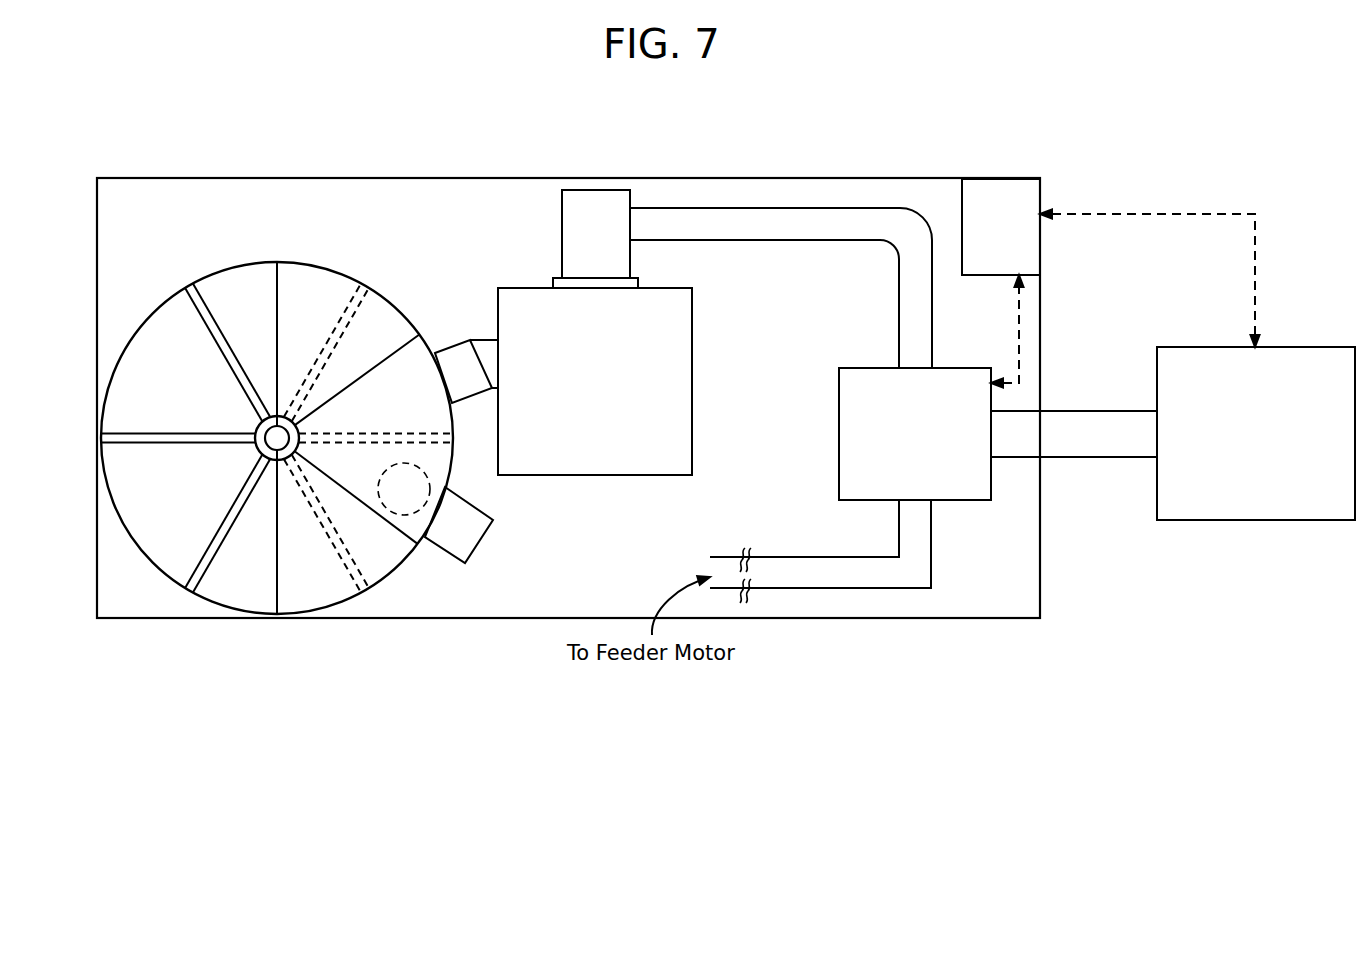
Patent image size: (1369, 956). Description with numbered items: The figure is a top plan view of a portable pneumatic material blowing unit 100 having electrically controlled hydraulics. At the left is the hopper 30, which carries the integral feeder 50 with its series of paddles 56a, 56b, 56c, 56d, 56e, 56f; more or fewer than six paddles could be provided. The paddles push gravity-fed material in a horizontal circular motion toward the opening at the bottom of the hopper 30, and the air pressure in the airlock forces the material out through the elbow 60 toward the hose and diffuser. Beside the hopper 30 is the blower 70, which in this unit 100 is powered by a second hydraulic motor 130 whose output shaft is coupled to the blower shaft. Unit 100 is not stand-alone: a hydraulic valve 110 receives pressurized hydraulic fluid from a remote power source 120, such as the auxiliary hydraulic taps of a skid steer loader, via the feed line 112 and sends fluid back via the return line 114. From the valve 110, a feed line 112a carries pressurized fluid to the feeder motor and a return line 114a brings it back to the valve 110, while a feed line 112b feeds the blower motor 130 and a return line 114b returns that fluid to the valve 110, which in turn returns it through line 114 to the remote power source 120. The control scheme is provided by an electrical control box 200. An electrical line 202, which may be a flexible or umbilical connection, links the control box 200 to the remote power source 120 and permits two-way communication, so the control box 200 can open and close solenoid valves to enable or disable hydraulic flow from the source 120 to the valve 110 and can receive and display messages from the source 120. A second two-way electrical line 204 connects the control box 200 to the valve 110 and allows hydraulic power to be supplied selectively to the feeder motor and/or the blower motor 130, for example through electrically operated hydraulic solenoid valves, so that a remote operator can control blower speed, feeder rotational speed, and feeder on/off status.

The portable pneumatic blowing unit 100 is at (213, 92).
The hopper 30 is at (160, 307).
The feeder 50 is at (210, 305).
The paddle 56a is at (132, 443).
The paddle 56b is at (218, 520).
The paddle 56c is at (357, 562).
The paddle 56d is at (393, 433).
The paddle 56e is at (340, 318).
The paddle 56f is at (217, 347).
The elbow 60 is at (478, 542).
The blower 70 is at (582, 391).
The hydraulic valve 110 is at (896, 448).
The feed line 112 is at (1098, 410).
The feed line 112a is at (790, 555).
The feed line 112b is at (745, 208).
The return line 114 is at (1090, 457).
The return line 114a is at (885, 590).
The return line 114b is at (745, 241).
The remote power source 120 is at (1253, 520).
The second hydraulic motor 130 is at (562, 235).
The control box 200 is at (1002, 198).
The electrical line 202 is at (1268, 278).
The electrical line 204 is at (1038, 310).